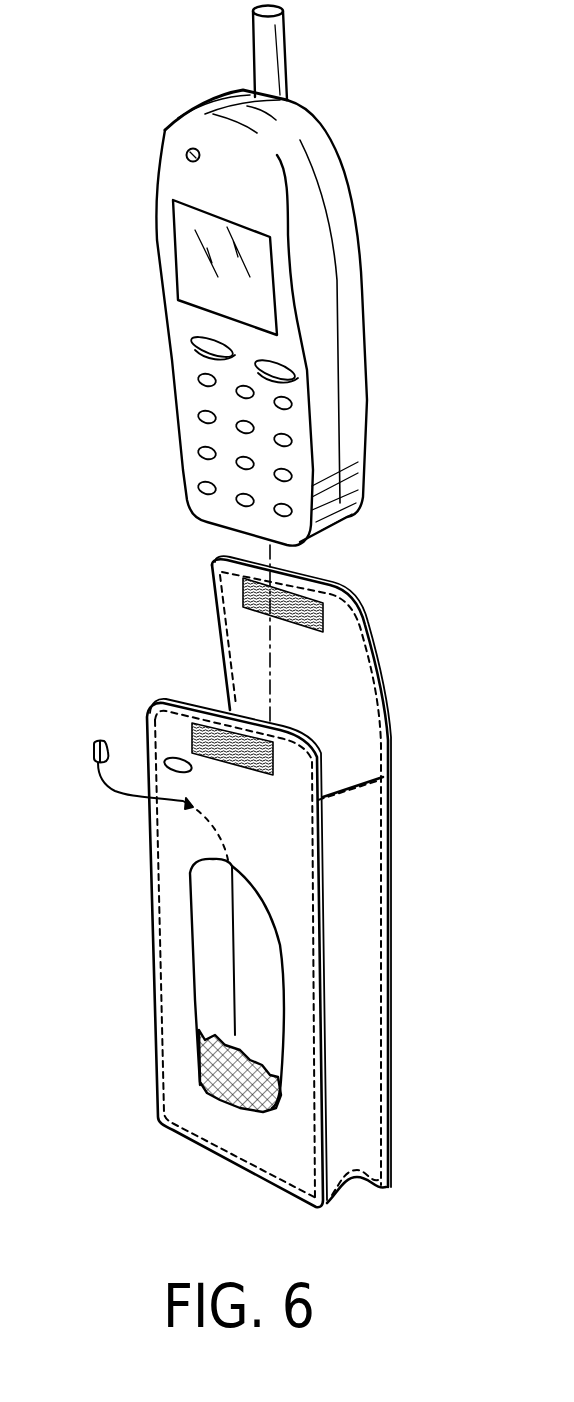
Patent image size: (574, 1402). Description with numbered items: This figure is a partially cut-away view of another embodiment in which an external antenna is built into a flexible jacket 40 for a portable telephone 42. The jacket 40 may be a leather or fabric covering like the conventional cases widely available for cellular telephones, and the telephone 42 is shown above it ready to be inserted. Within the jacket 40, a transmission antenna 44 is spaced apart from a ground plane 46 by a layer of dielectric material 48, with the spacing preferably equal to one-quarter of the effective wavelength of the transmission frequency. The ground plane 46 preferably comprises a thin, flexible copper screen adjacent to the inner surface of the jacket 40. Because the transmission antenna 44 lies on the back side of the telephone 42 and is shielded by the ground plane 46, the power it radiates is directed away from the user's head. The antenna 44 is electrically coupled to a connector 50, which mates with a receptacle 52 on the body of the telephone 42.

The flexible jacket 40 is at (360, 882).
The portable telephone 42 is at (170, 360).
The transmission antenna 44 is at (233, 898).
The ground plane 46 is at (198, 1063).
The layer of dielectric material 48 is at (211, 950).
The connector 50 is at (97, 742).
The receptacle 52 is at (186, 155).